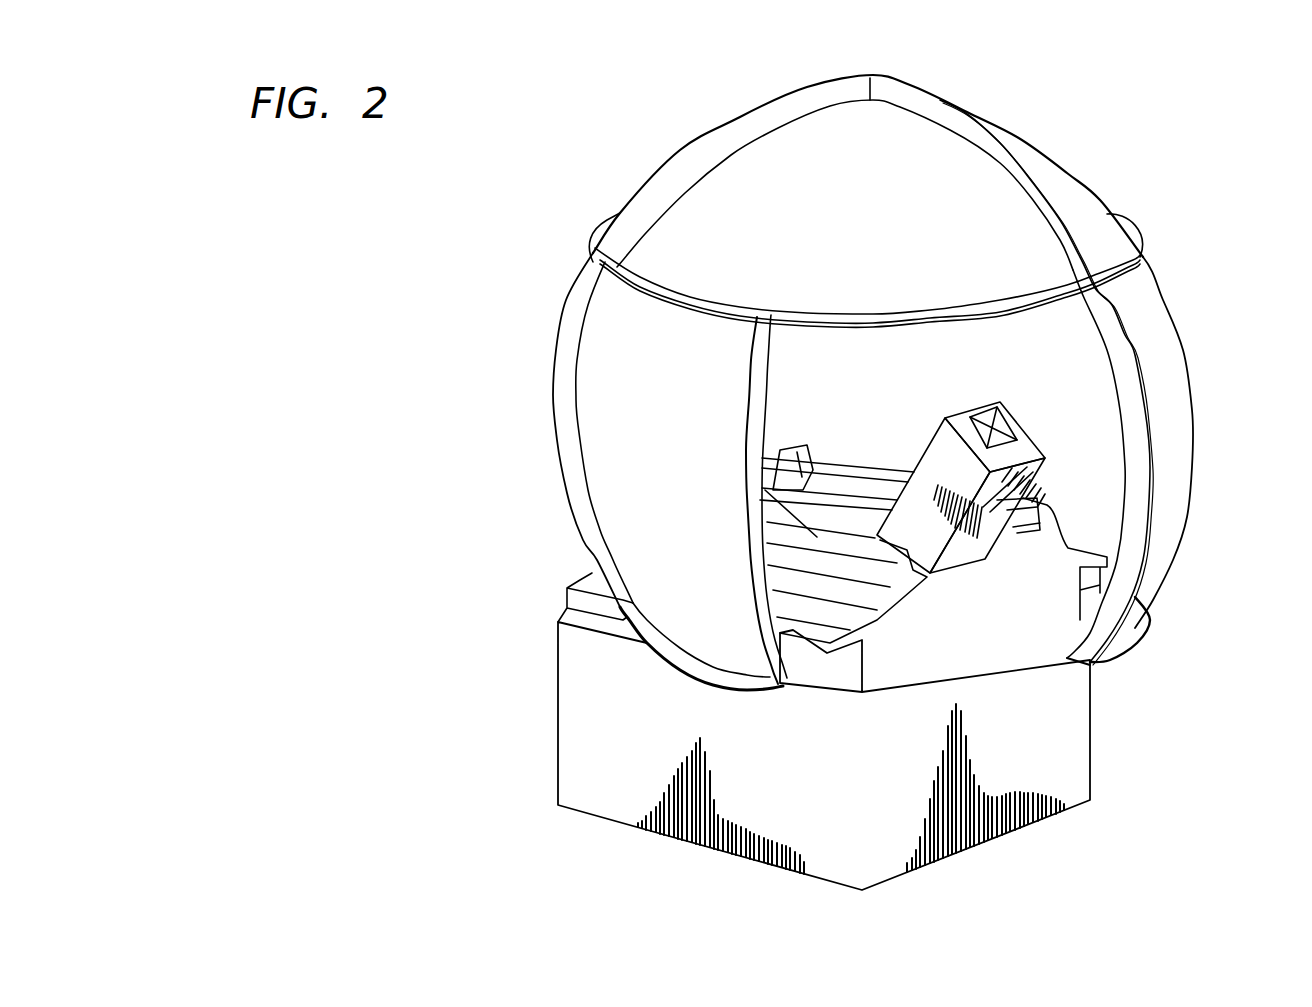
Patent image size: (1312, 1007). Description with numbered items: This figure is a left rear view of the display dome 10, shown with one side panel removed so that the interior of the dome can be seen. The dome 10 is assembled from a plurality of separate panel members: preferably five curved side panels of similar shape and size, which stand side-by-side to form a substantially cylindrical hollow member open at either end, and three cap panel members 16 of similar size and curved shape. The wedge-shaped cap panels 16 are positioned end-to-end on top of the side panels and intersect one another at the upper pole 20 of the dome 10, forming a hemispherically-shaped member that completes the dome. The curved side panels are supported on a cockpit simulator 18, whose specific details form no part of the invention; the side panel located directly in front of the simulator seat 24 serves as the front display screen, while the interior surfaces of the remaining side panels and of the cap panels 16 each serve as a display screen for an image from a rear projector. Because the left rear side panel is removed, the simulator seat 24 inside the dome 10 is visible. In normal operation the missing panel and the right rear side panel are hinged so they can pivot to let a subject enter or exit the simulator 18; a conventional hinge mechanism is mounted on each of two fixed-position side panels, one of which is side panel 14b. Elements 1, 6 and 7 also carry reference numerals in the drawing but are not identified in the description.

The base housing 1 is at (552, 738).
The spherical cage frame 6 is at (1118, 382).
The rib seam 7 is at (1135, 337).
The display dome 10 is at (887, 372).
The fixed position side panel 14b is at (622, 440).
The cap panel member 16 is at (740, 190).
The cockpit simulator 18 is at (1153, 637).
The upper pole 20 is at (905, 72).
The simulator seat 24 is at (940, 463).